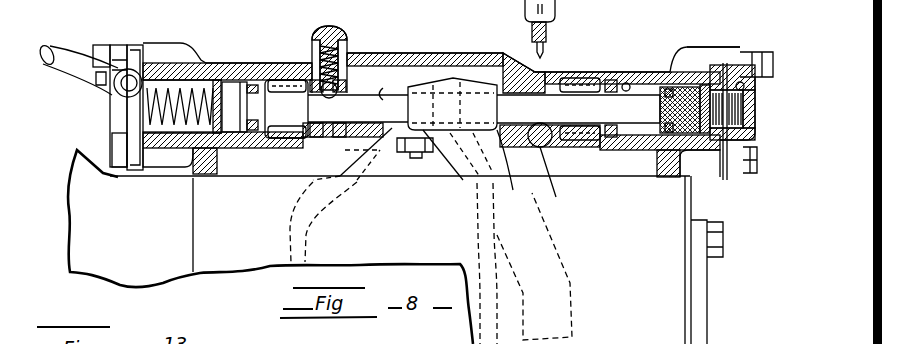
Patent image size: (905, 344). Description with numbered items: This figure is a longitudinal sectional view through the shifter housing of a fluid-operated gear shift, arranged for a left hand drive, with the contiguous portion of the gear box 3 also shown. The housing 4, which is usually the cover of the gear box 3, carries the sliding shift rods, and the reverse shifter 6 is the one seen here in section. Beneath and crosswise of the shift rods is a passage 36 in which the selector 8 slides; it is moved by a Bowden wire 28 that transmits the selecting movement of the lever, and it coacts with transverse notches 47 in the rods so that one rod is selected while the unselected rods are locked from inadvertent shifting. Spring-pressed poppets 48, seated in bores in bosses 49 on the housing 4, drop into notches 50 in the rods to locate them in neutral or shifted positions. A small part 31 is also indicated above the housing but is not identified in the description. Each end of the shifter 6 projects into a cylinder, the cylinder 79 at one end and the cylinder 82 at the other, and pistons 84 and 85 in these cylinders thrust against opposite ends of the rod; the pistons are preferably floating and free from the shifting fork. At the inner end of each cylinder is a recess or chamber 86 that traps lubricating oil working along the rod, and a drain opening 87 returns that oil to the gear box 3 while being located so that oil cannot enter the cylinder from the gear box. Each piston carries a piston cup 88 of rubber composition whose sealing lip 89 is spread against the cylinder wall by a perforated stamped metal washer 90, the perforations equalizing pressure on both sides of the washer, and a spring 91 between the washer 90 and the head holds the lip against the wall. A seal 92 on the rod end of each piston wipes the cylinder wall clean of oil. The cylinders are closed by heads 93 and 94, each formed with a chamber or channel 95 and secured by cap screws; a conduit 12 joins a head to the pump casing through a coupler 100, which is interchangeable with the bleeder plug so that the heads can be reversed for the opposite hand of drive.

The gear box 3 is at (204, 240).
The housing 4 is at (451, 52).
The shifter 6 is at (363, 108).
The selector 8 is at (548, 198).
The conduit 12 is at (63, 68).
The Bowden wire 28 is at (538, 47).
The drill chuck 31 is at (556, 24).
The passage 36 is at (493, 200).
The transverse notches 47 is at (562, 118).
The spring-pressed poppets 48 is at (343, 62).
The bosses 49 is at (330, 28).
The notches 50 is at (317, 98).
The cylinder 79 is at (240, 85).
The cylinder 82 is at (622, 84).
The piston 84 is at (256, 150).
The piston 85 is at (657, 177).
The recess or chamber 86 is at (287, 138).
The drain opening 87 is at (300, 140).
The piston cup 88 is at (688, 87).
The sealing lip 89 is at (706, 87).
The stamped metal washer 90 is at (730, 178).
The spring 91 is at (150, 108).
The seal 92 is at (247, 82).
The head 93 is at (115, 52).
The head 94 is at (750, 92).
The chamber or channel 95 is at (732, 128).
The coupler 100 is at (127, 56).